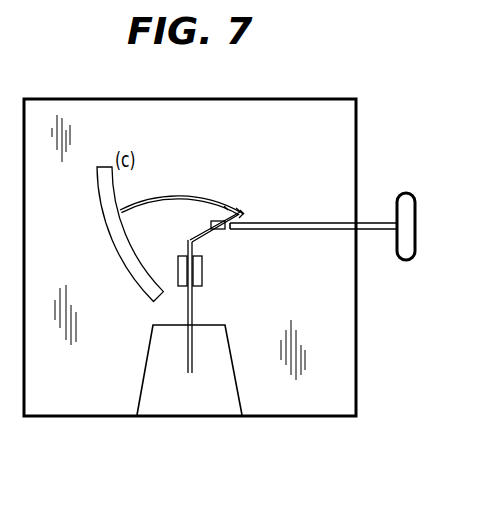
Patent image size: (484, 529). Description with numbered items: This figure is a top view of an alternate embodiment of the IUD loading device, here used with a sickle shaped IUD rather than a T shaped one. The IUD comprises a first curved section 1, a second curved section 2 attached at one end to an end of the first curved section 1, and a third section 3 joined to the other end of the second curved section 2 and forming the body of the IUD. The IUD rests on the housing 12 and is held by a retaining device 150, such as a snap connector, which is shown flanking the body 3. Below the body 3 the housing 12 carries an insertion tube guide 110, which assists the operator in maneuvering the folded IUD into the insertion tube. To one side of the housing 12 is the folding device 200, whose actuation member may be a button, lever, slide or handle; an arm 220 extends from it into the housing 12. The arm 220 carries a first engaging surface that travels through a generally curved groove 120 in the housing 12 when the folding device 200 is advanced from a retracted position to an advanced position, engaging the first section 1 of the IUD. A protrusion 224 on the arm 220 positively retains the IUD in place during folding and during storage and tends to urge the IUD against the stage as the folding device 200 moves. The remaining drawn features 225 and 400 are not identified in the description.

The first curved section 1 is at (183, 197).
The second curved section 2 is at (249, 217).
The third section 3 is at (192, 300).
The housing 12 is at (310, 418).
The insertion tube guide 110 is at (195, 402).
The curved groove 120 is at (210, 225).
The retaining device 150 is at (202, 275).
The folding device 200 is at (402, 192).
The arm 220 is at (295, 228).
The protrusion 224 is at (242, 205).
The contact point 225 is at (227, 205).
The guide band 400 is at (118, 244).